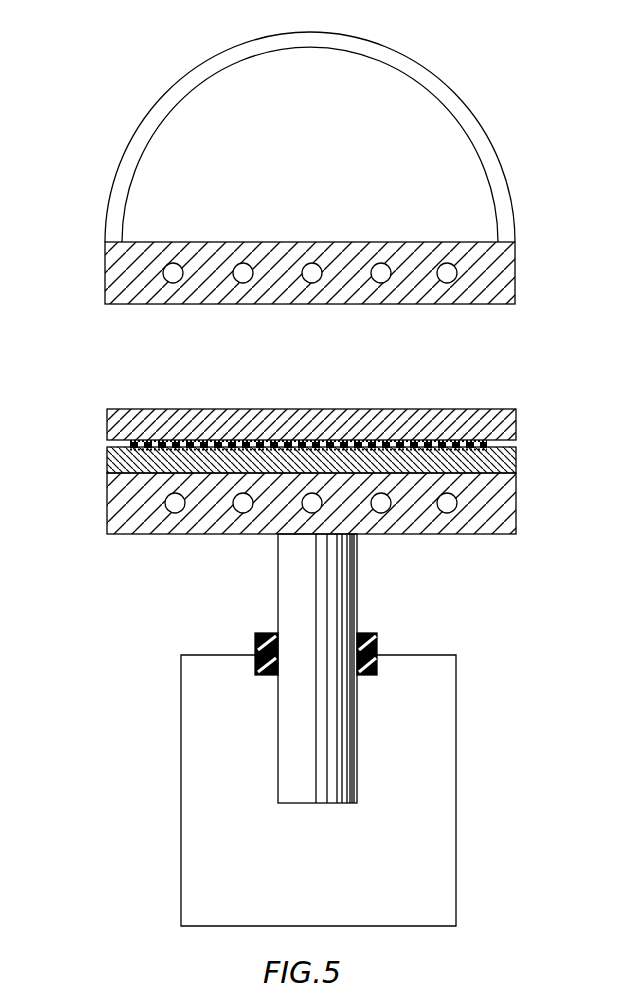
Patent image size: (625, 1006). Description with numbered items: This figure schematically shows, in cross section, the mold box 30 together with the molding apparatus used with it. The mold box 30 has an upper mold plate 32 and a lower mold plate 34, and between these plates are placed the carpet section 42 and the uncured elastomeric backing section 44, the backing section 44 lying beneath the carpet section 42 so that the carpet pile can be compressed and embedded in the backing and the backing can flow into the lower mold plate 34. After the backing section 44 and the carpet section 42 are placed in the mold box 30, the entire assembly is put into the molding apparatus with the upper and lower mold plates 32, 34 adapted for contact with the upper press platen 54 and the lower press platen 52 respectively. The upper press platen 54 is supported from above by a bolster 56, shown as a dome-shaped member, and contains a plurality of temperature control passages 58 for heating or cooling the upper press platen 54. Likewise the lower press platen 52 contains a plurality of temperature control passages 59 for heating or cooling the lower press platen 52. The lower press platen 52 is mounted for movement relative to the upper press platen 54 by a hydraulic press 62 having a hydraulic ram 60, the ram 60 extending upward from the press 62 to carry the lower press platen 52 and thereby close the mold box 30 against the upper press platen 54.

The mold box 30 is at (308, 478).
The upper mold plate 32 is at (447, 418).
The lower mold plate 34 is at (508, 462).
The carpet section 42 is at (190, 445).
The uncured elastomeric backing section 44 is at (282, 445).
The lower press platen 52 is at (354, 531).
The upper press platen 54 is at (347, 241).
The bolster 56 is at (461, 98).
The temperature control passages 58 is at (243, 270).
The temperature control passages 59 is at (381, 510).
The hydraulic ram 60 is at (285, 578).
The hydraulic press 62 is at (457, 752).